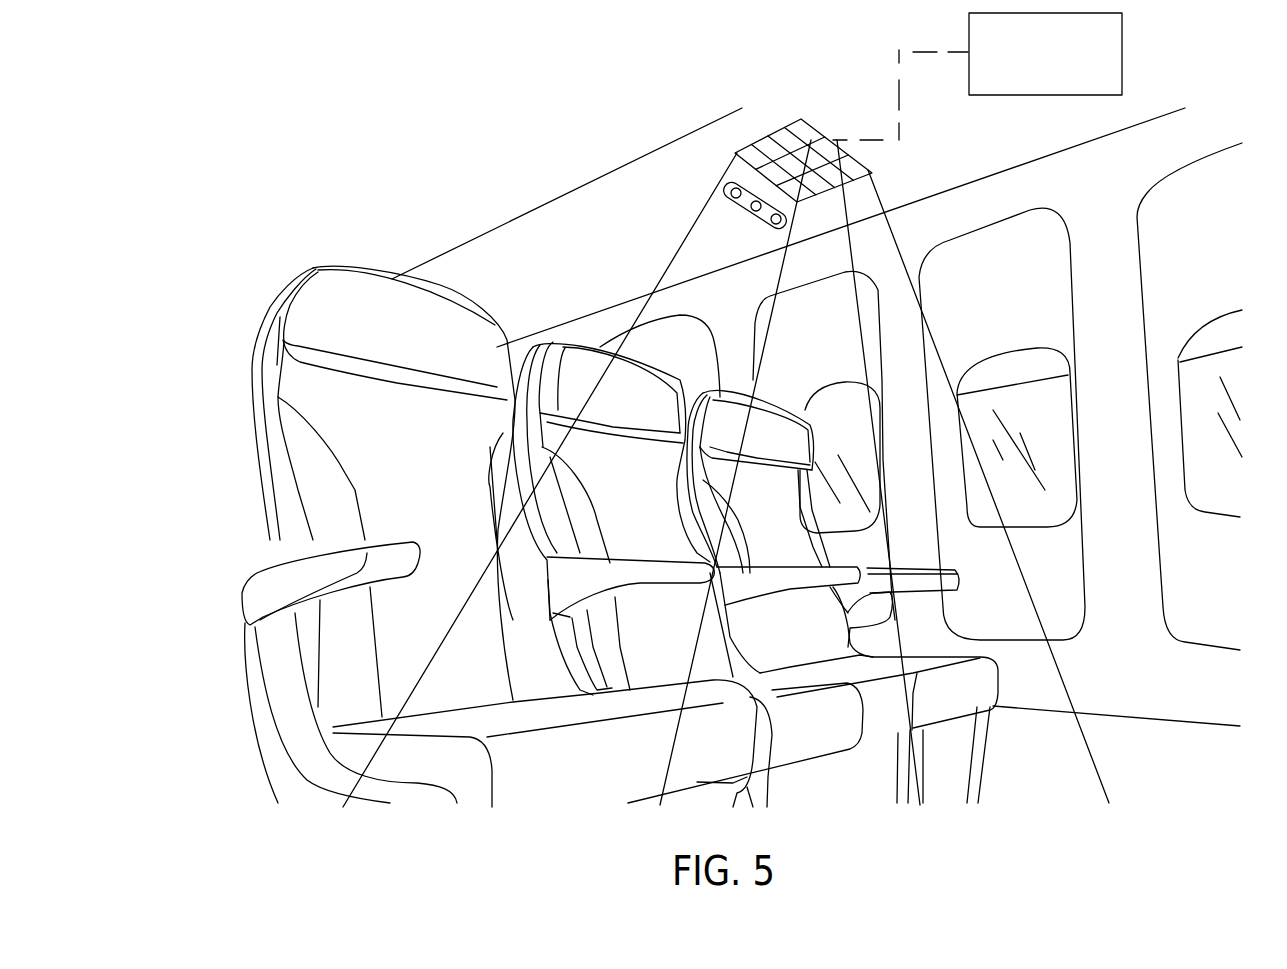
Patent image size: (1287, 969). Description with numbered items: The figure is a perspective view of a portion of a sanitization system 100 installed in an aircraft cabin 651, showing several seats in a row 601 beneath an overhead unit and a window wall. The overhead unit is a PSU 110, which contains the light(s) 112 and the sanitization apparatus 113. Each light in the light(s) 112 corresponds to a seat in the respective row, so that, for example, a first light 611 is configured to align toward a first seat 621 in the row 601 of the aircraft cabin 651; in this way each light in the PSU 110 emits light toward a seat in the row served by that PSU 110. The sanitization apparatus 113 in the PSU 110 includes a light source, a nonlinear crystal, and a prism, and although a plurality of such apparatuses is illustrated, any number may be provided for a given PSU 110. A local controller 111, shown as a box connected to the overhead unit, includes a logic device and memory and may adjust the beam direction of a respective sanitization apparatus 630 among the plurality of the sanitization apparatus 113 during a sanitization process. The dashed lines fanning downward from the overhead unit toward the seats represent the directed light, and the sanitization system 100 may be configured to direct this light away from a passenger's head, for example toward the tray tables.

The sanitization system 100 is at (369, 146).
The aircraft cabin 651 is at (264, 203).
The row 601 is at (194, 528).
The first seat 621 is at (415, 467).
The PSU 110 is at (697, 106).
The sanitization apparatus 113 is at (757, 107).
The sanitization apparatus 630 is at (800, 126).
The lights 112 is at (719, 175).
The first light 611 is at (722, 186).
The local controller 111 is at (1022, 89).